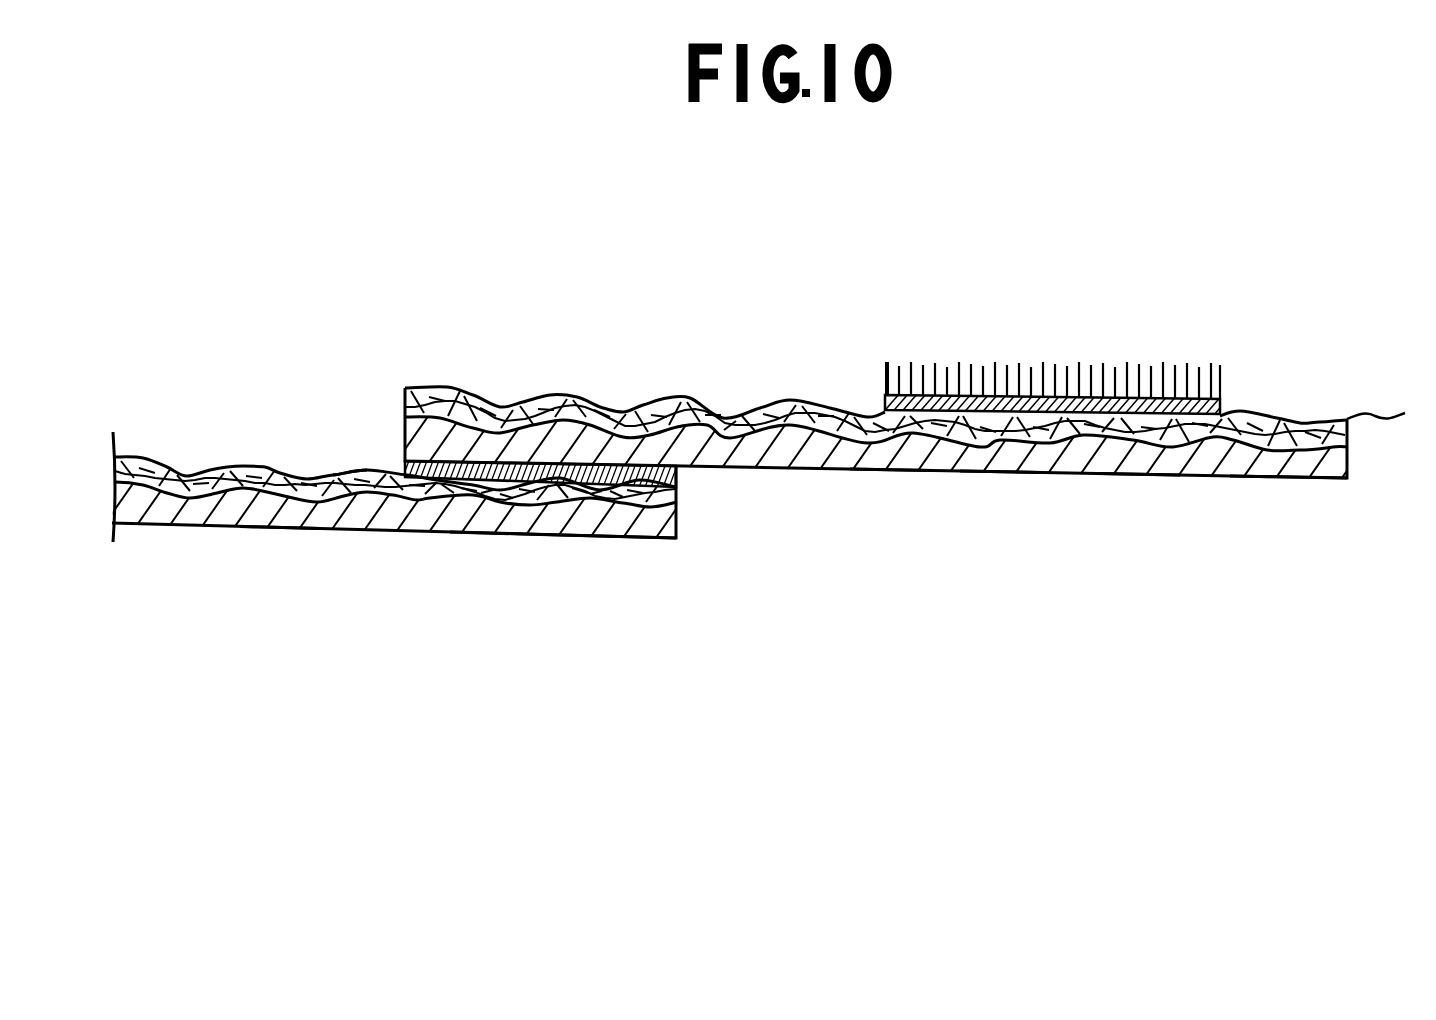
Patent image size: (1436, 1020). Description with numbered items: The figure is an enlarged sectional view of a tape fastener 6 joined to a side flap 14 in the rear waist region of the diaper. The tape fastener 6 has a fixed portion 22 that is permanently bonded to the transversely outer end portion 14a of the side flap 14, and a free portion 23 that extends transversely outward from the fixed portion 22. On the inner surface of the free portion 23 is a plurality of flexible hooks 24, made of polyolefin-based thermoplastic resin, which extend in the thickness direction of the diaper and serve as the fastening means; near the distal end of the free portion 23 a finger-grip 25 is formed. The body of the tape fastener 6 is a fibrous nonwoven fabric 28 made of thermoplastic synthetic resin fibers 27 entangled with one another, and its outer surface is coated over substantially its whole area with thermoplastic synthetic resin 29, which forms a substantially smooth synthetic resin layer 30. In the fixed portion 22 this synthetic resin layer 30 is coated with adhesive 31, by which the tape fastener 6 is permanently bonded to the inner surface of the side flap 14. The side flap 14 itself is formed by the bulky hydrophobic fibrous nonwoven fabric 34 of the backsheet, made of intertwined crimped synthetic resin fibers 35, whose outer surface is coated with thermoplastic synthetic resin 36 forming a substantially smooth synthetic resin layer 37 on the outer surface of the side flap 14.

The tape fastener 6 is at (1390, 403).
The side flap 14 is at (373, 513).
The transversely outer end portion 14a is at (585, 526).
The fixed portion 22 is at (523, 440).
The free portion 23 is at (997, 457).
The flexible hooks 24 is at (1222, 396).
The finger-grip 25 is at (1273, 457).
The thermoplastic synthetic resin fibers 27 is at (601, 402).
The fibrous nonwoven fabric 28 is at (1282, 418).
The thermoplastic synthetic resin 29 is at (1140, 460).
The synthetic resin layer 30 is at (886, 456).
The adhesive 31 is at (666, 470).
The fibrous nonwoven fabric 34 is at (258, 460).
The synthetic resin fiber 35 is at (353, 477).
The thermoplastic synthetic resin 36 is at (495, 523).
The synthetic resin layer 37 is at (283, 512).